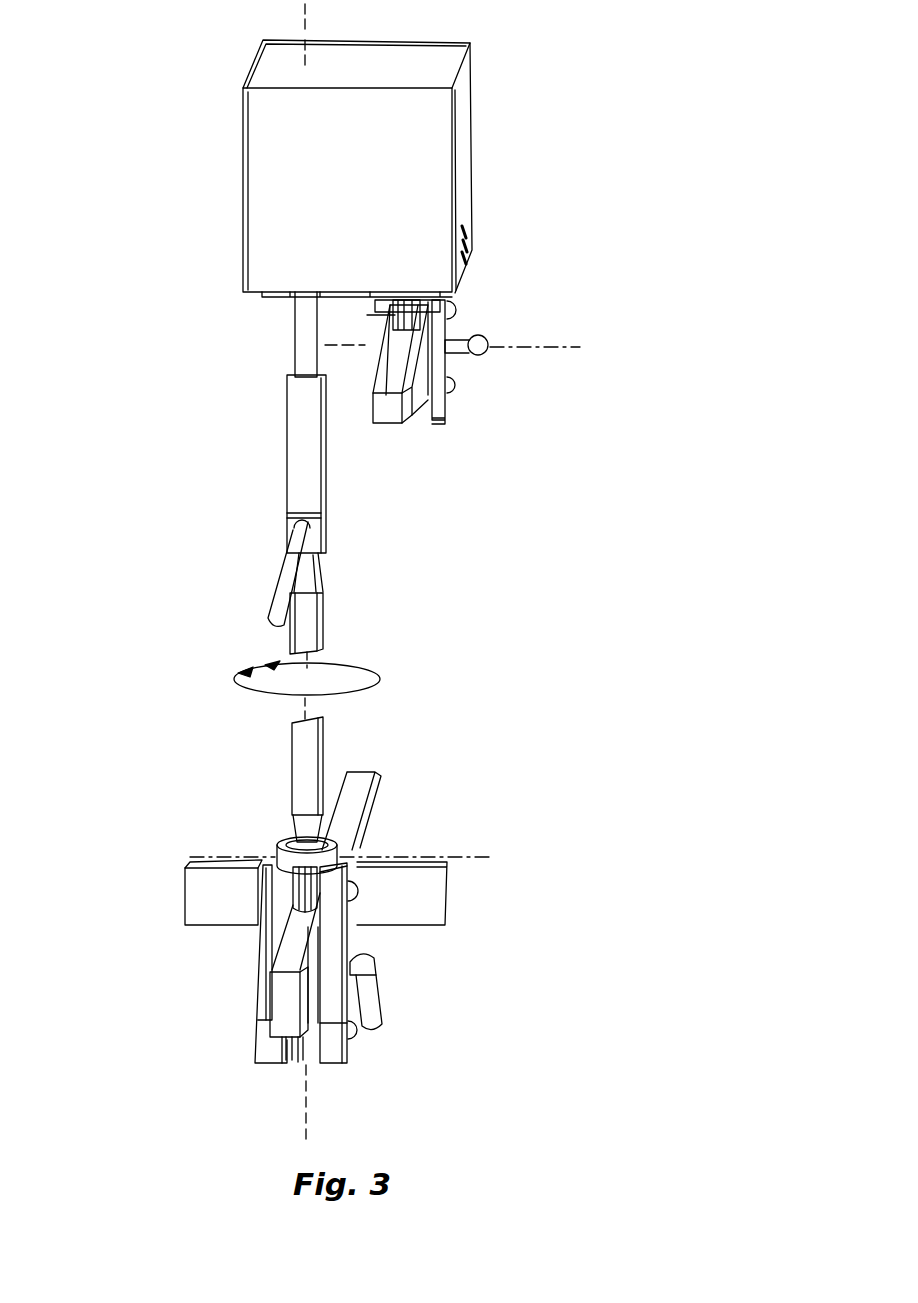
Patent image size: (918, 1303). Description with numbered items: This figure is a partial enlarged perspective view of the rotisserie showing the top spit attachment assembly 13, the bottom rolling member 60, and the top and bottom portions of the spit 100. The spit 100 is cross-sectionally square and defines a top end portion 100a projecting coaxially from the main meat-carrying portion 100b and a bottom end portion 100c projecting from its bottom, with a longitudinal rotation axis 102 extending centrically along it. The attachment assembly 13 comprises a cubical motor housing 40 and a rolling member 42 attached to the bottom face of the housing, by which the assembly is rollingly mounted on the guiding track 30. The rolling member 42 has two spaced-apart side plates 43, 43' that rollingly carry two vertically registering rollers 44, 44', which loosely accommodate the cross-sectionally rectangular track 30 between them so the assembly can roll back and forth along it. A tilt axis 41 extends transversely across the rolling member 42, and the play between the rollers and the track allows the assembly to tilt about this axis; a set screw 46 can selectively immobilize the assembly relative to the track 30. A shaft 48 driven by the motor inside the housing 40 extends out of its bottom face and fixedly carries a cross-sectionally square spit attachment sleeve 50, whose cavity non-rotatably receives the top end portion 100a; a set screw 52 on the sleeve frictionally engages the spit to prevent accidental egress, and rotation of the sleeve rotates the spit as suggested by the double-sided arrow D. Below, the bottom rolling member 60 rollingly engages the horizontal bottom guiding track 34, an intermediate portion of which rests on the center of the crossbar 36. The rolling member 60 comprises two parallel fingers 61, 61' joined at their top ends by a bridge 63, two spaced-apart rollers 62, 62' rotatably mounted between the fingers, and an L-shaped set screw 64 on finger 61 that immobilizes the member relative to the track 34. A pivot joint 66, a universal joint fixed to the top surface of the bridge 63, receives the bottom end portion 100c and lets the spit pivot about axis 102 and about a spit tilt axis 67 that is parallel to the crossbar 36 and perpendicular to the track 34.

The longitudinal rotation axis 102 is at (305, 18).
The top spit attachment assembly 13 is at (472, 125).
The cubical motor housing 40 is at (265, 172).
The shaft 48 is at (300, 317).
The spit attachment sleeve 50 is at (292, 420).
The set screw 52 is at (287, 588).
The top end portion 100a is at (312, 582).
The spit 100 is at (327, 630).
The double-sided arrow D is at (373, 672).
The main meat-carrying portion 100b is at (300, 766).
The bottom end portion 100c is at (297, 828).
The pivot joint 66 is at (348, 852).
The spit tilt axis 67 is at (488, 855).
The bottom guiding track 34 is at (350, 802).
The crossbar 36 is at (220, 913).
The roller 62 is at (176, 964).
The bridge 63 is at (347, 878).
The finger 61' is at (221, 976).
The bottom rolling member 60 is at (352, 935).
The finger 61 is at (388, 989).
The roller 62' is at (231, 1075).
The L-shaped set screw 64 is at (372, 1000).
The top roller 44 is at (468, 279).
The set screw 46 is at (475, 340).
The tilt axis 41 is at (493, 347).
The side plate 43 is at (492, 398).
The rolling member 42 is at (452, 410).
The guiding track 30 is at (388, 418).
The bottom roller 44' is at (454, 451).
The side plate 43' is at (365, 408).